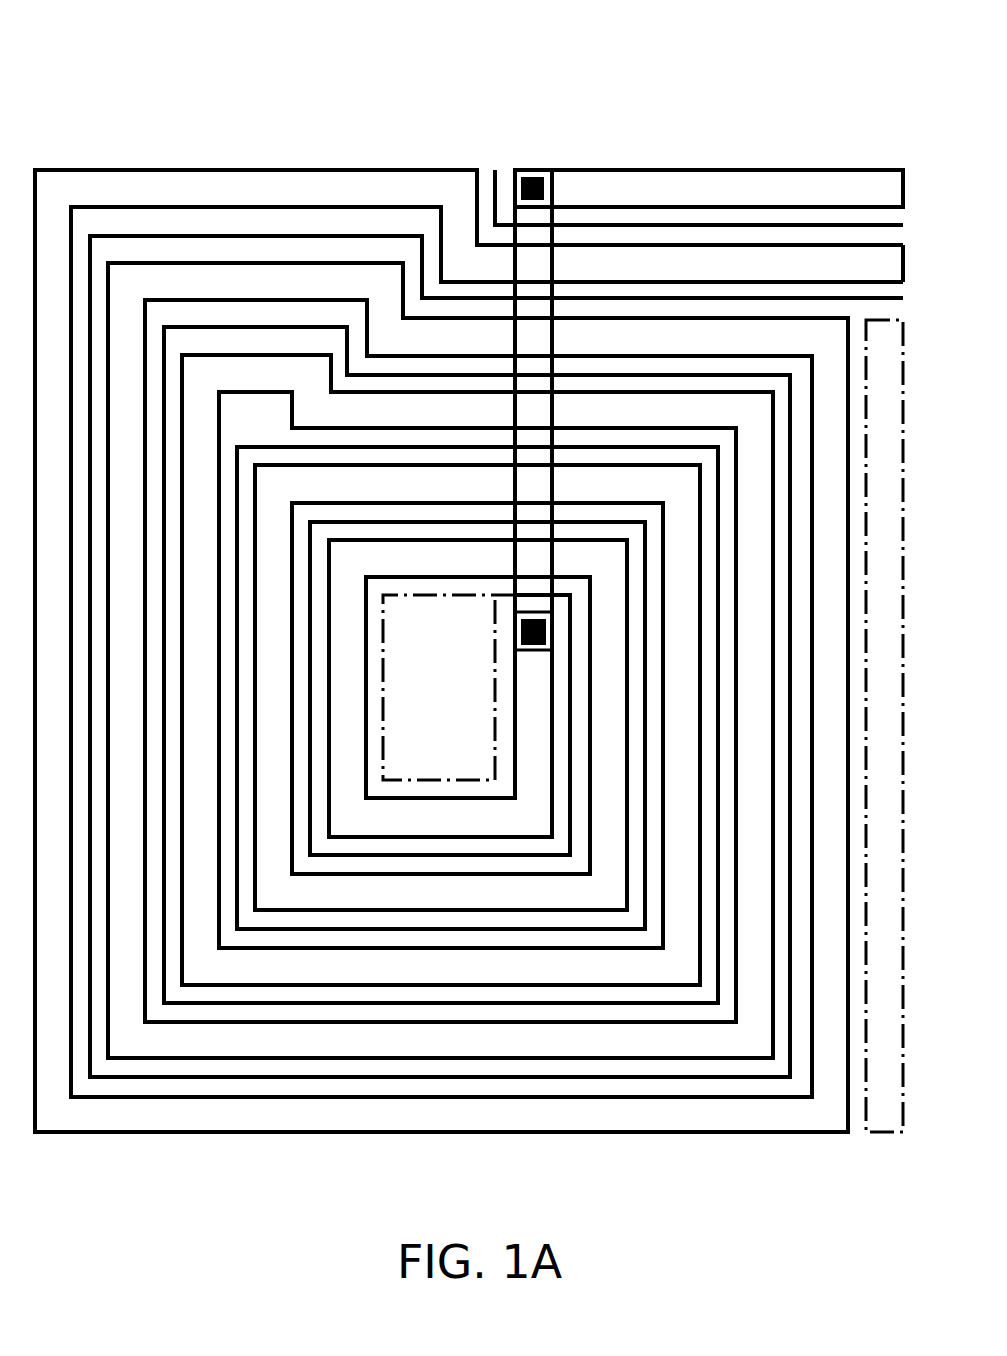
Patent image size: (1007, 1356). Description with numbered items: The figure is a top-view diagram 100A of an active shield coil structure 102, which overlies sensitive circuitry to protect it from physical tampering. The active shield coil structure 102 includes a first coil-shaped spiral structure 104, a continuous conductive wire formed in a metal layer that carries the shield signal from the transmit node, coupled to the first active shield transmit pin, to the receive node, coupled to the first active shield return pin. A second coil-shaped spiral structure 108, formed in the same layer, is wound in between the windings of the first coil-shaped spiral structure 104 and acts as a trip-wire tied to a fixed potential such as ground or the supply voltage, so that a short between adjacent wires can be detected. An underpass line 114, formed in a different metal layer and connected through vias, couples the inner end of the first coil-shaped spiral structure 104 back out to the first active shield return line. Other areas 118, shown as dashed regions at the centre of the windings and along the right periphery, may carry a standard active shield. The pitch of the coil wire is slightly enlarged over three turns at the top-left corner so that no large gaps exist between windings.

The top-view diagram 100A is at (93, 32).
The active shield coil structure 102 is at (676, 61).
The first coil-shaped spiral structure 104 is at (218, 256).
The second coil-shaped spiral structure 108 is at (292, 228).
The underpass line 114 is at (560, 260).
The other areas 118 is at (458, 699).